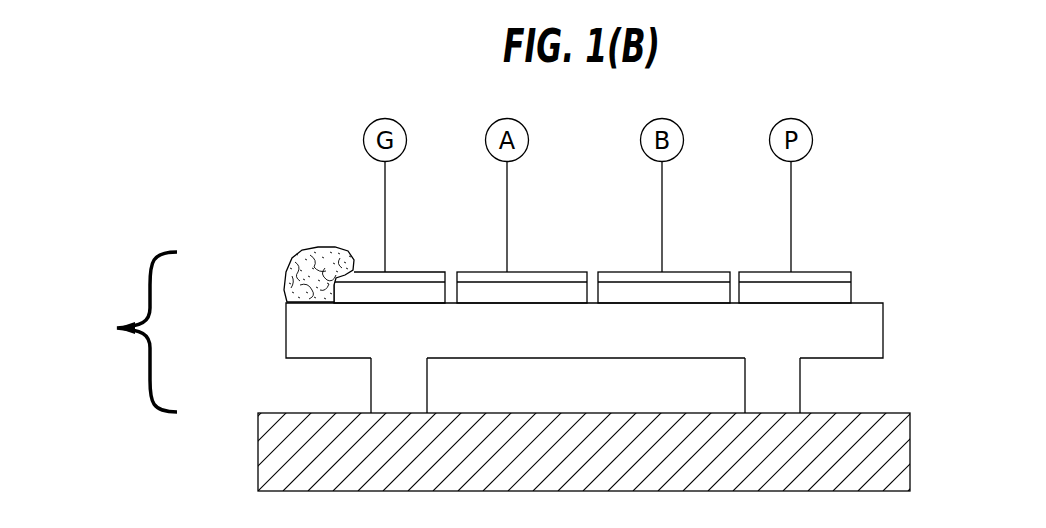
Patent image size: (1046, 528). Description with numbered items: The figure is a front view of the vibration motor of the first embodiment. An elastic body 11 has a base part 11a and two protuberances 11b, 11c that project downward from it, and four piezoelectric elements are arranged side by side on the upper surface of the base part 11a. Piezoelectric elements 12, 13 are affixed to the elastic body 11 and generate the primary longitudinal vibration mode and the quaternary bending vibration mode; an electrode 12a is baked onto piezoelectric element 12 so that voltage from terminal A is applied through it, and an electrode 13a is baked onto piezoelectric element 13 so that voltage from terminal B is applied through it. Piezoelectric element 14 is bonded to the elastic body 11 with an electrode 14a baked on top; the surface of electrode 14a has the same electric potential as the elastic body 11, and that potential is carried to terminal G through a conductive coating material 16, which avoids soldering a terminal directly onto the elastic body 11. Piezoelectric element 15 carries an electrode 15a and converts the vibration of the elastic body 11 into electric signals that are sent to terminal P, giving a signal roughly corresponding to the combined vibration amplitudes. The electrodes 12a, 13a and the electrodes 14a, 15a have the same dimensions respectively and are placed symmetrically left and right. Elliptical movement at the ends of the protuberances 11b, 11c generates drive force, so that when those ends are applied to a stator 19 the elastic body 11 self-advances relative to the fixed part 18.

The elastic body 11 is at (565, 341).
The base part 11a is at (297, 335).
The protuberance 11b is at (410, 387).
The protuberance 11c is at (783, 386).
The piezoelectric element 12 is at (522, 250).
The electrode 12a is at (525, 282).
The piezoelectric element 13 is at (669, 250).
The electrode 13a is at (678, 265).
The piezoelectric element 14 is at (400, 250).
The electrode 14a is at (403, 267).
The piezoelectric element 15 is at (805, 250).
The electrode 15a is at (808, 265).
The conductive coating material 16 is at (310, 248).
The fixed part 18 is at (895, 412).
The stator 19 is at (119, 332).